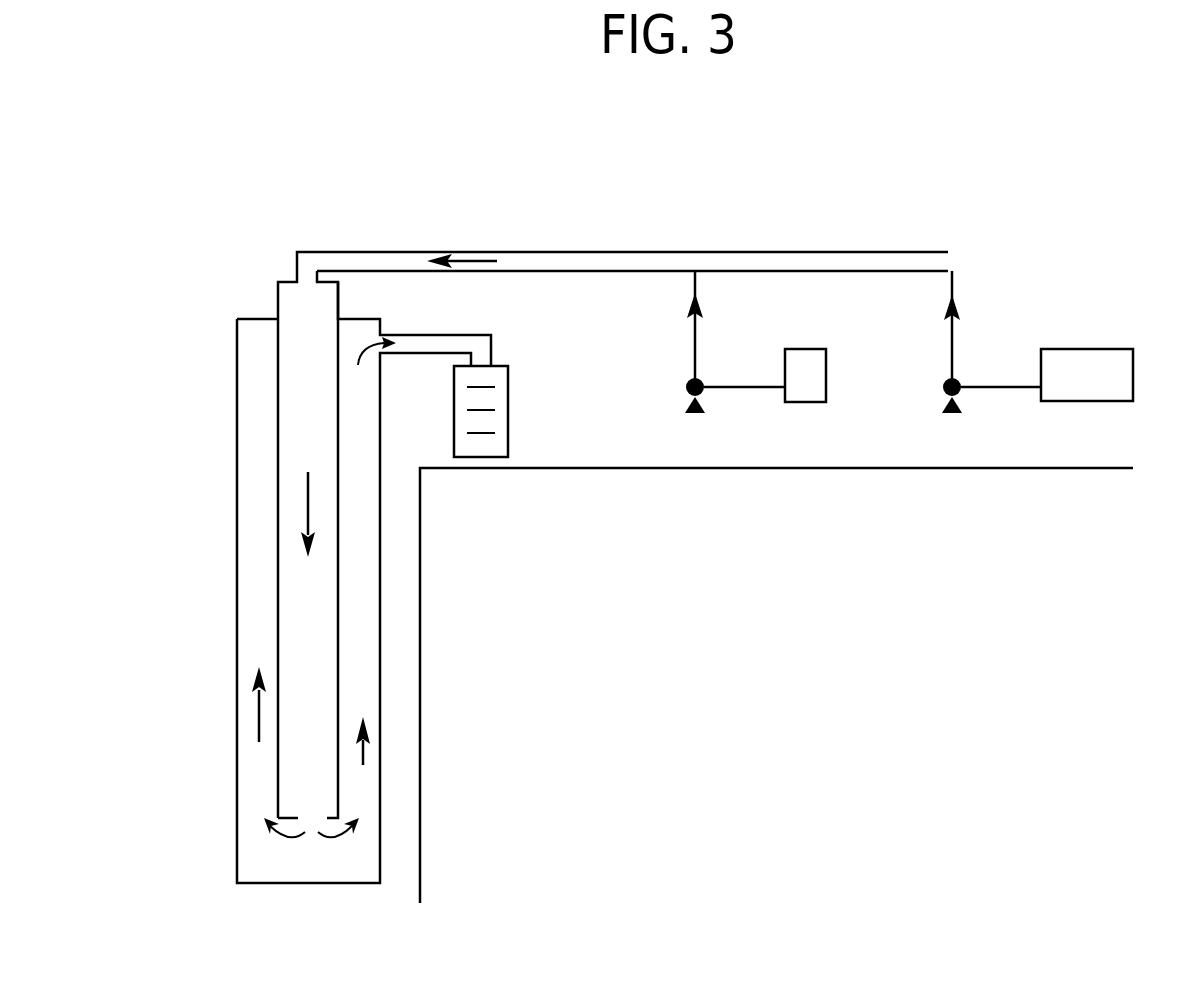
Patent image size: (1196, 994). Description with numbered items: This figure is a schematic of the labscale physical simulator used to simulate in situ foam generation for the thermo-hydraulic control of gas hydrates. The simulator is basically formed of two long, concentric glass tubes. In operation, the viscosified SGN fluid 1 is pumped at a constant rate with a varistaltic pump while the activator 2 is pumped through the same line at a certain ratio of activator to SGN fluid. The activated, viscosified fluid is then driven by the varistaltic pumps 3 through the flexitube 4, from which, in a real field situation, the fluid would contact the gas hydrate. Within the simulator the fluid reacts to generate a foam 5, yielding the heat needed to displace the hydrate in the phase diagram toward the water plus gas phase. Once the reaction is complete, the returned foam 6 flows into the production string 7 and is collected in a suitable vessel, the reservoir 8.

The viscosified SGN fluid 1 is at (1047, 344).
The activator 2 is at (806, 347).
The varistaltic pumps 3 is at (704, 418).
The flexitube 4 is at (344, 600).
The foam 5 is at (316, 784).
The returned foam 6 is at (362, 662).
The production string 7 is at (382, 538).
The reservoir 8 is at (527, 421).